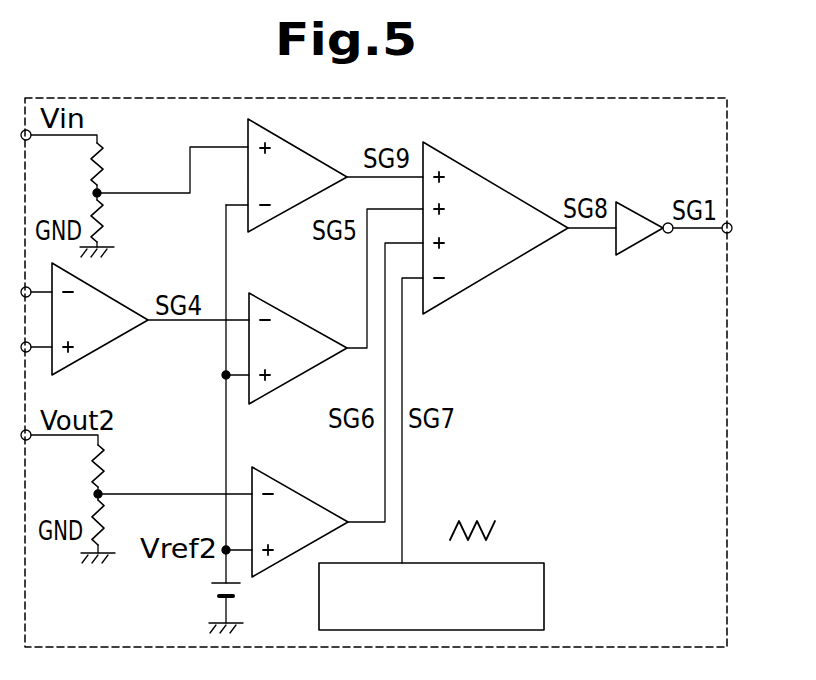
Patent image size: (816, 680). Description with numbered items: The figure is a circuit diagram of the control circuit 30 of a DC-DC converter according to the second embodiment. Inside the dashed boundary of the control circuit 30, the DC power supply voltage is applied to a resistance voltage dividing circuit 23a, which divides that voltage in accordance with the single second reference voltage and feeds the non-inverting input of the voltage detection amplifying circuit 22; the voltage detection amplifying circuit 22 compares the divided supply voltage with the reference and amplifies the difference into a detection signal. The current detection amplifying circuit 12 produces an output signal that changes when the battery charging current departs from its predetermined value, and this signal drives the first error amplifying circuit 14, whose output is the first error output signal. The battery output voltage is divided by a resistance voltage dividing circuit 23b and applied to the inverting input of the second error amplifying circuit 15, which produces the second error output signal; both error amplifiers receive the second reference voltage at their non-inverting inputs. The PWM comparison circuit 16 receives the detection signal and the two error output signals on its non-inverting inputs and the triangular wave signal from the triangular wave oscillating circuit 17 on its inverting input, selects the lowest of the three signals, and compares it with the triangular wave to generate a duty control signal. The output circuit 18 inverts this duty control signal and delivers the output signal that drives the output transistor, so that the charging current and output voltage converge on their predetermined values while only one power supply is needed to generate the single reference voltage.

The current detection amplifying circuit 12 is at (118, 302).
The first error amplifying circuit 14 is at (313, 328).
The second error amplifying circuit 15 is at (315, 502).
The PWM comparison circuit 16 is at (497, 185).
The triangular wave oscillating circuit 17 is at (544, 585).
The output circuit 18 is at (638, 212).
The voltage detection amplifying circuit 22 is at (310, 157).
The resistance voltage dividing circuit 23a is at (103, 155).
The resistance voltage dividing circuit 23b is at (104, 456).
The control circuit 30 is at (727, 170).